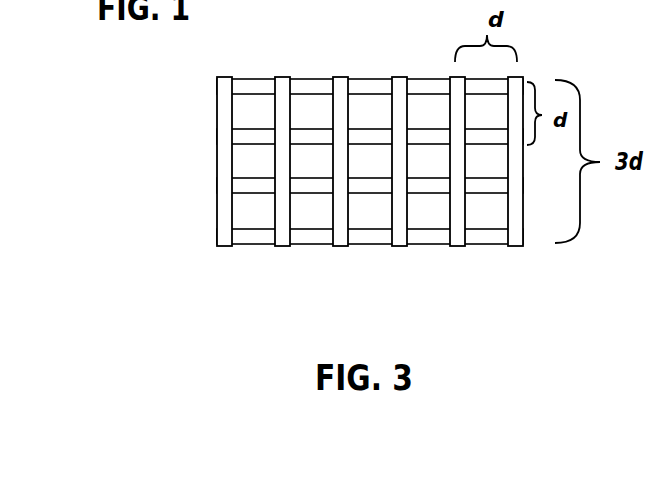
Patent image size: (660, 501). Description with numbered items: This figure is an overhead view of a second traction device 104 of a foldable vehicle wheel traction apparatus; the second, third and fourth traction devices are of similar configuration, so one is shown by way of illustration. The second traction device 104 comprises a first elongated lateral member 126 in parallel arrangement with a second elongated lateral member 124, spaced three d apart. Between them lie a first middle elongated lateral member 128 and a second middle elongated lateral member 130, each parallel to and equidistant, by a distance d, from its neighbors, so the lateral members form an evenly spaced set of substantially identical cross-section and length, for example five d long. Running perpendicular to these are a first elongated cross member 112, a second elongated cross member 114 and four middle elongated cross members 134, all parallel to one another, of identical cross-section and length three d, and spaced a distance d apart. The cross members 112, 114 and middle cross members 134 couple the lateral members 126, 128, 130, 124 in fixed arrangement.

The second traction device 104 is at (416, 66).
The first elongated cross member 112 is at (205, 203).
The second elongated cross member 114 is at (515, 260).
The second elongated lateral member 124 is at (252, 67).
The first elongated lateral member 126 is at (247, 260).
The first middle elongated lateral member 128 is at (231, 172).
The second middle elongated lateral member 130 is at (247, 116).
The middle elongated cross members 134 is at (436, 255).